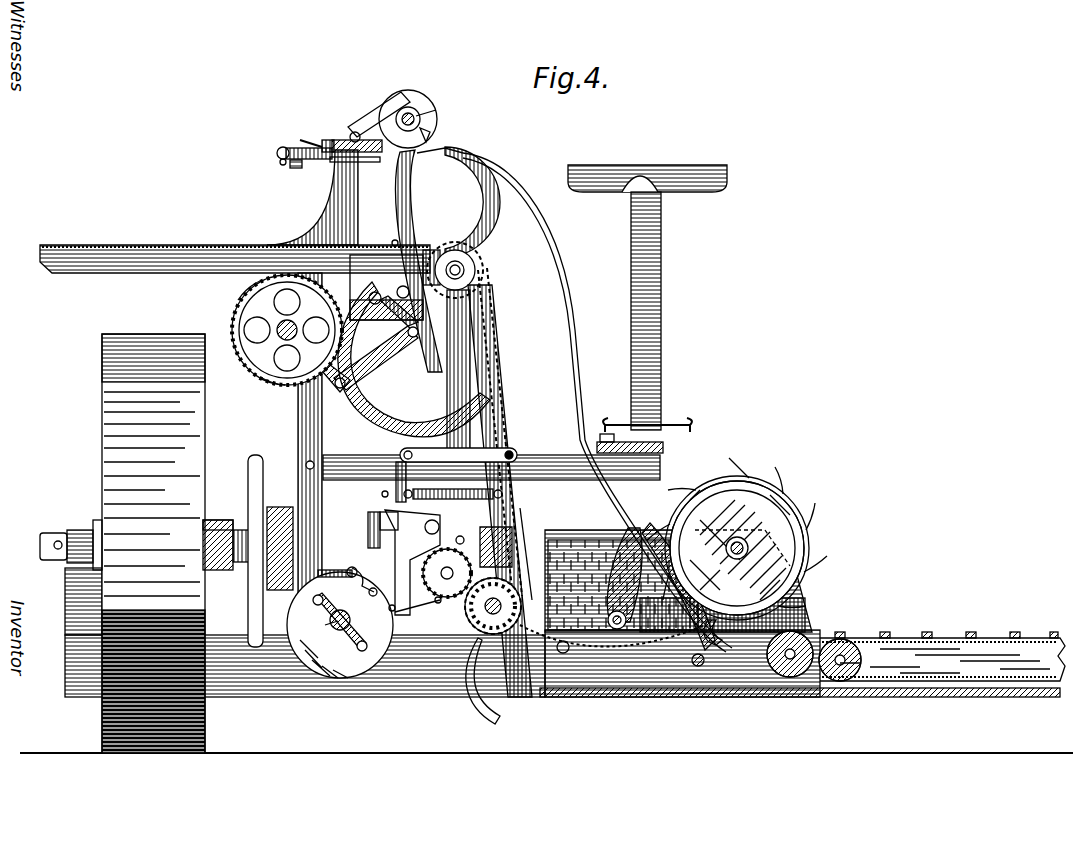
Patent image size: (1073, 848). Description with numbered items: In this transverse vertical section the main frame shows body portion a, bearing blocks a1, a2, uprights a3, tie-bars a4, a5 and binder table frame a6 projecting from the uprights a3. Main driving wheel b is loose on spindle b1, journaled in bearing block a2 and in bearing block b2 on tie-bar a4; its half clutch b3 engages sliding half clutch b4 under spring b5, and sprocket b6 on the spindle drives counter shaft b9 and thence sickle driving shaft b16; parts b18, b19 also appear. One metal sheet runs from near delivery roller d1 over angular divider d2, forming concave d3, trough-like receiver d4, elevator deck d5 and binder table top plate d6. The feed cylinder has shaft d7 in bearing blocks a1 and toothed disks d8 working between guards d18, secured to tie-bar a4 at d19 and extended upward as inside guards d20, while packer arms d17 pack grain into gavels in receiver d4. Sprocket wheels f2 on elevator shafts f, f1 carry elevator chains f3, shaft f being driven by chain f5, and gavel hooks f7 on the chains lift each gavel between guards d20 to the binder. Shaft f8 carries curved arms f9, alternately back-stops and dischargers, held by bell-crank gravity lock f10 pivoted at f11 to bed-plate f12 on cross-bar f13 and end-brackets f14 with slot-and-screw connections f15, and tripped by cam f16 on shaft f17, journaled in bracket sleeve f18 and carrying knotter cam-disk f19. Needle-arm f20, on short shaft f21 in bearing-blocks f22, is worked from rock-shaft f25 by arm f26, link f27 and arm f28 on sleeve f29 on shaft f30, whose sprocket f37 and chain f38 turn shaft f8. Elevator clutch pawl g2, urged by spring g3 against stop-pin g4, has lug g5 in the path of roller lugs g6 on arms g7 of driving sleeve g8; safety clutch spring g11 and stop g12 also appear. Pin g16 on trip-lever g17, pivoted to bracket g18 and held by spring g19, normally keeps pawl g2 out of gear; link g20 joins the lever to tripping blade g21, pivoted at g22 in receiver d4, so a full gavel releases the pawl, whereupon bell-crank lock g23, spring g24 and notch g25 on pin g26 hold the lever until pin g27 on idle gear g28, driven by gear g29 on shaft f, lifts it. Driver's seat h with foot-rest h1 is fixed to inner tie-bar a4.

The body portion a is at (290, 690).
The bearing blocks a1 is at (553, 548).
The bearing block a2 is at (72, 590).
The uprights a3 is at (302, 438).
The longitudinal tie-bar a4 is at (663, 448).
The transverse tie-bar a5 is at (346, 448).
The binder table frame a6 is at (163, 270).
The main driving wheel b is at (110, 435).
The spindle b1 is at (42, 546).
The bearing block b2 is at (262, 500).
The half clutch b3 is at (216, 520).
The sliding half clutch b4 is at (254, 538).
The spring b5 is at (242, 564).
The driving sprocket b6 is at (266, 592).
The counter shaft b9 is at (218, 508).
The sickle driving shaft b16 is at (702, 667).
The roller b18 is at (846, 642).
The conveyor belt b19 is at (944, 636).
The delivery roller d1 is at (790, 678).
The angular divider d2 is at (645, 536).
The concave d3 is at (685, 636).
The receiver d4 is at (592, 648).
The deck d5 is at (500, 356).
The top plate d6 is at (230, 240).
The cylinder shaft d7 is at (732, 556).
The toothed disks d8 is at (808, 545).
The packer arms d17 is at (618, 545).
The guards d18 is at (682, 540).
The attachment point d19 is at (606, 434).
The inside guards d20 is at (304, 140).
The lower elevator shaft f is at (472, 614).
The upper elevator shaft f1 is at (476, 270).
The sprocket wheels f2 is at (480, 282).
The elevator chains f3 is at (430, 409).
The chain f5 is at (474, 700).
The gavel carrying hooks f7 is at (490, 220).
The shaft f8 is at (412, 252).
The arms f9 is at (410, 214).
The bell-crank lock f10 is at (378, 114).
The pivot f11 is at (352, 133).
The bed-plate f12 is at (280, 150).
The cross-bar f13 is at (342, 163).
The end-brackets f14 is at (320, 218).
The slot and screw connections f15 is at (326, 140).
The cam f16 is at (430, 134).
The trip-shaft f17 is at (436, 110).
The bracket sleeve f18 is at (412, 110).
The cam-disk f19 is at (403, 92).
The needle-arm f20 is at (378, 404).
The short shaft f21 is at (398, 288).
The bearing-blocks f22 is at (397, 240).
The rock-shaft f25 is at (368, 297).
The arm f26 is at (335, 355).
The link f27 is at (372, 358).
The arm f28 is at (278, 356).
The sleeve f29 is at (255, 330).
The shaft f30 is at (300, 316).
The sprocket f37 is at (238, 312).
The chain f38 is at (262, 380).
The clutch member g2 is at (338, 610).
The spring g3 is at (350, 568).
The stop-pin g4 is at (373, 588).
The lug g5 is at (314, 603).
The driving lugs g6 is at (363, 651).
The arms g7 is at (325, 626).
The driving sleeve g8 is at (342, 648).
The spring g11 is at (396, 596).
The stop g12 is at (360, 626).
The pin g16 is at (424, 611).
The trip-lever g17 is at (398, 470).
The bearing bracket g18 is at (486, 540).
The spring g19 is at (430, 499).
The link g20 is at (500, 452).
The tripping blade g21 is at (522, 510).
The pivot g22 is at (562, 653).
The bell-crank lock g23 is at (426, 524).
The spring g24 is at (370, 526).
The notch g25 is at (383, 496).
The pin g26 is at (389, 528).
The pin g27 is at (458, 544).
The idle gear g28 is at (447, 575).
The gear g29 is at (436, 603).
The seat h is at (664, 194).
The foot-rest h1 is at (688, 424).